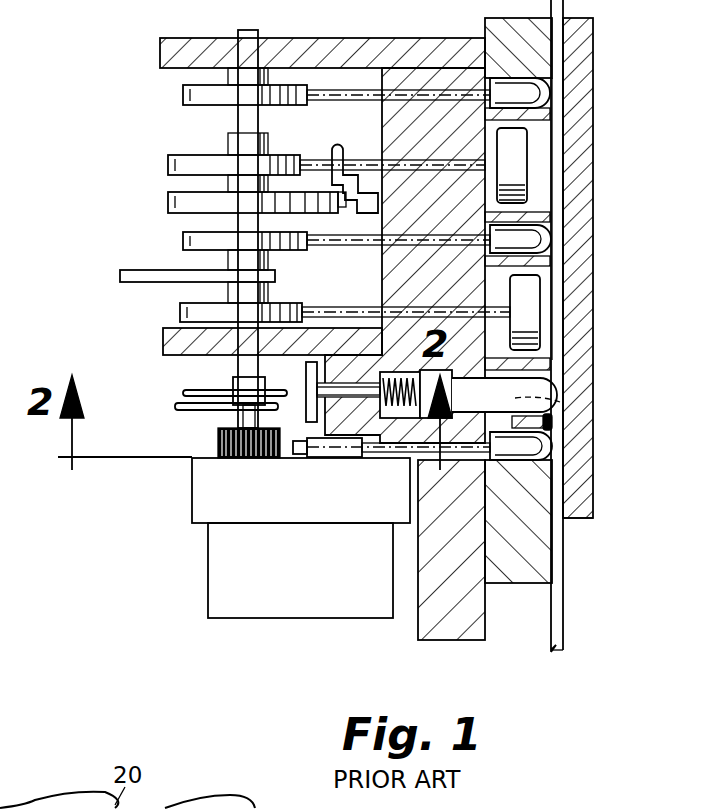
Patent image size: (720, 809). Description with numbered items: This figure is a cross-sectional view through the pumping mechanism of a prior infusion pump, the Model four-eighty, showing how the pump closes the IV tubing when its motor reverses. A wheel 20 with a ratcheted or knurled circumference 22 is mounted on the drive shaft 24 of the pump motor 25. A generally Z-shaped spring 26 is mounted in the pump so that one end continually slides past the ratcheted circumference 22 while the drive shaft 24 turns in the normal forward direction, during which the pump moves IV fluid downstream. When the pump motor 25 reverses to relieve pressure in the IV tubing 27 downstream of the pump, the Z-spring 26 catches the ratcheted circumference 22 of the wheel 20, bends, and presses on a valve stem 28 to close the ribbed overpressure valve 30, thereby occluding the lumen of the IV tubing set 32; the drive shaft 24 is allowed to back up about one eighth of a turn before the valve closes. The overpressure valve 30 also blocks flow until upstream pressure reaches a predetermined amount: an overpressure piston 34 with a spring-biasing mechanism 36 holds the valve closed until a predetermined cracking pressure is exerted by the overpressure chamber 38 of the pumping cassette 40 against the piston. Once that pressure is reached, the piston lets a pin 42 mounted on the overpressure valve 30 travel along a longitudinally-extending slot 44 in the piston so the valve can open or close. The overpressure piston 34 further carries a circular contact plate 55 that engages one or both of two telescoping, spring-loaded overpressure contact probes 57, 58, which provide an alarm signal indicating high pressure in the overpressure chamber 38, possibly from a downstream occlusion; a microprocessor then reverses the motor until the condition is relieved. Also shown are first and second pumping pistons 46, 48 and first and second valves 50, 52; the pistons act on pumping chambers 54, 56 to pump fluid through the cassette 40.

The wheel 20 is at (216, 431).
The ratcheted circumference 22 is at (192, 456).
The drive shaft 24 is at (232, 418).
The pump motor 25 is at (208, 570).
The Z-shaped spring 26 is at (290, 458).
The IV tubing 27 is at (561, 631).
The valve stem 28 is at (397, 458).
The overpressure valve 30 is at (549, 462).
The IV tubing set 32 is at (565, 587).
The overpressure piston 34 is at (549, 388).
The spring-biasing mechanism 36 is at (381, 415).
The overpressure chamber 38 is at (551, 372).
The pumping cassette 40 is at (567, 136).
The pin 42 is at (548, 423).
The longitudinally-extending slot 44 is at (562, 402).
The first pumping piston 46 is at (529, 168).
The second pumping piston 48 is at (541, 312).
The first valve 50 is at (548, 83).
The second valve 52 is at (549, 224).
The pumping chamber 54 is at (553, 186).
The circular contact plate 55 is at (312, 424).
The pumping chamber 56 is at (553, 272).
The overpressure contact probe 57 is at (190, 390).
The overpressure contact probe 58 is at (178, 405).